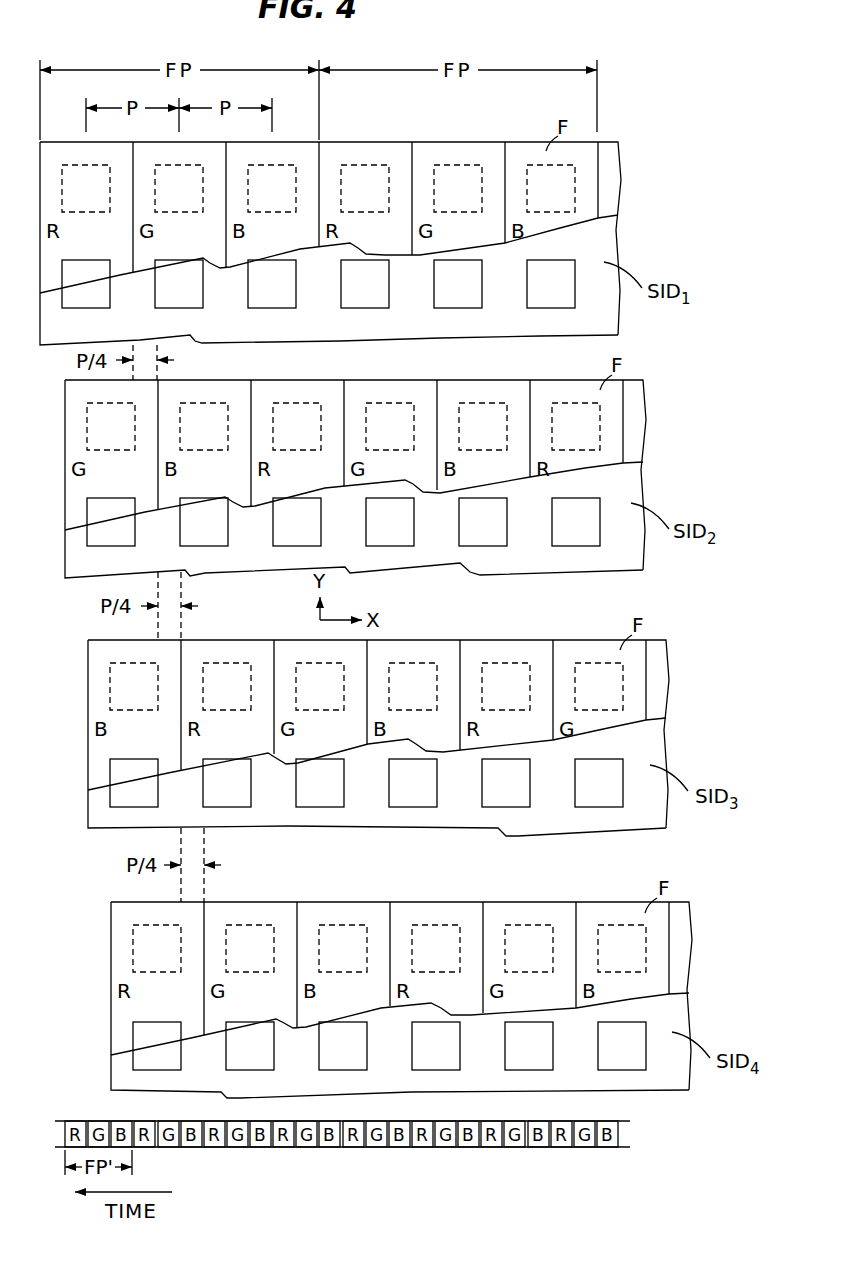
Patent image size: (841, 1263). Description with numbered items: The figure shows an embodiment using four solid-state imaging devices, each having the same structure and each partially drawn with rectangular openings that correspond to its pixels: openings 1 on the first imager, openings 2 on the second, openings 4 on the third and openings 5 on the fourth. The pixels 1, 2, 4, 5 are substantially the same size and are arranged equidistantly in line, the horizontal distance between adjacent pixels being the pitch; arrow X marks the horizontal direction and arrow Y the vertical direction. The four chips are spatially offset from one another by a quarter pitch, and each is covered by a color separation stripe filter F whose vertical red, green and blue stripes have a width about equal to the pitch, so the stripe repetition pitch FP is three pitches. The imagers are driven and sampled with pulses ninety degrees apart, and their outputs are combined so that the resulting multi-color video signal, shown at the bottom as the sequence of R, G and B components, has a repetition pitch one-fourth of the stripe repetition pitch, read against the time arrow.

The rectangular opening 1 is at (110, 285).
The rectangular opening 2 is at (135, 523).
The rectangular opening 4 is at (158, 784).
The rectangular opening 5 is at (181, 1047).